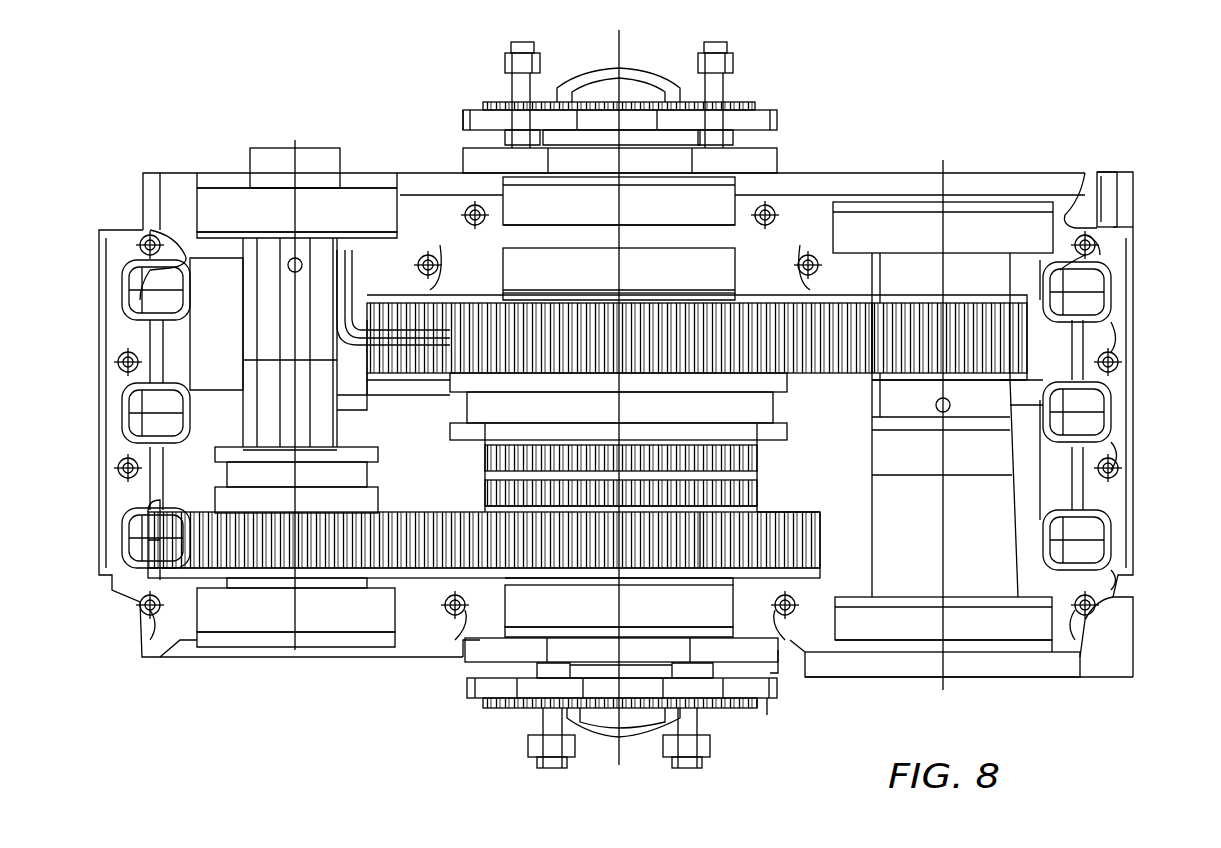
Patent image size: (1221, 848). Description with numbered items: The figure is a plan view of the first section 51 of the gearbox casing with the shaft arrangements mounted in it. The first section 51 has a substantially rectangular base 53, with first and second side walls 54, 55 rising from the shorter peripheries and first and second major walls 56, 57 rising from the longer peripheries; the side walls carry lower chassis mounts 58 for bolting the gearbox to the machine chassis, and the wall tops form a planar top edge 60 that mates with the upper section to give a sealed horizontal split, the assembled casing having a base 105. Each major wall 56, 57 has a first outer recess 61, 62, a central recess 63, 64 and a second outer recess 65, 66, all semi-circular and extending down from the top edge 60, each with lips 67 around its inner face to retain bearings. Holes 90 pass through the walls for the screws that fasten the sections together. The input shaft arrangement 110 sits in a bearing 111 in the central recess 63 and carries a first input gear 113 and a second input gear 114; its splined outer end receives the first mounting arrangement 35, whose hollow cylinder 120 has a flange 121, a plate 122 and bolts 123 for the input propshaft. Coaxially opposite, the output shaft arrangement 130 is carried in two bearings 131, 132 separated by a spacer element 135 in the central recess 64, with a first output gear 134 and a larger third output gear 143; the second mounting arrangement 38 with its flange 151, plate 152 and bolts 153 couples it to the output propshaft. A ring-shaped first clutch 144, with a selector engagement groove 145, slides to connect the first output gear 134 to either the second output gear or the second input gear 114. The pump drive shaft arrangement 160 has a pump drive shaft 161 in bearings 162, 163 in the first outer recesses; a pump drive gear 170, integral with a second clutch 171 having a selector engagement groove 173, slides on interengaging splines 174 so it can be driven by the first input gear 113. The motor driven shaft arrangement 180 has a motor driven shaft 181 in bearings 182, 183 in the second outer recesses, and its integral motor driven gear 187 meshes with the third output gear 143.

The first mounting arrangement 35 is at (748, 720).
The second mounting arrangement 38 is at (762, 108).
The first section 51 is at (1117, 197).
The base 53 is at (1125, 380).
The first side wall 54 is at (100, 292).
The second side wall 55 is at (1135, 590).
The first major wall 56 is at (1120, 680).
The second major wall 57 is at (1093, 170).
The lower chassis mount 58 is at (1140, 415).
The top edge 60 is at (1135, 272).
The first outer recess 61 is at (195, 638).
The first outer recess 62 is at (190, 178).
The central recess 63 is at (505, 612).
The central recess 64 is at (777, 165).
The second outer recess 65 is at (1045, 665).
The second outer recess 66 is at (1110, 170).
The lip 67 is at (185, 238).
The hole 90 is at (145, 235).
The base 105 is at (1130, 495).
The input shaft arrangement 110 is at (815, 515).
The bearing 111 is at (619, 607).
The first input gear 113 is at (820, 540).
The second input gear 114 is at (757, 490).
The hollow cylinder 120 is at (520, 668).
The flange 121 is at (478, 705).
The plate 122 is at (603, 740).
The bolt 123 is at (550, 770).
The output shaft arrangement 130 is at (473, 464).
The bearing 131 is at (619, 201).
The bearing 132 is at (619, 259).
The first output gear 134 is at (757, 458).
The spacer element 135 is at (672, 240).
The third output gear 143 is at (432, 355).
The first clutch 144 is at (787, 432).
The selector engagement groove 145 is at (618, 398).
The flange 151 is at (463, 118).
The plate 152 is at (635, 85).
The bolt 153 is at (505, 62).
The pump drive shaft arrangement 160 is at (240, 360).
The pump drive shaft 161 is at (243, 332).
The bearing 162 is at (297, 193).
The bearing 163 is at (296, 612).
The pump drive gear 170 is at (185, 520).
The second clutch 171 is at (484, 532).
The selector engagement groove 173 is at (296, 467).
The interengaging splines 174 is at (353, 430).
The motor driven shaft arrangement 180 is at (1030, 466).
The motor driven shaft 181 is at (945, 425).
The bearing 182 is at (943, 227).
The bearing 183 is at (943, 624).
The motor driven gear 187 is at (1025, 335).